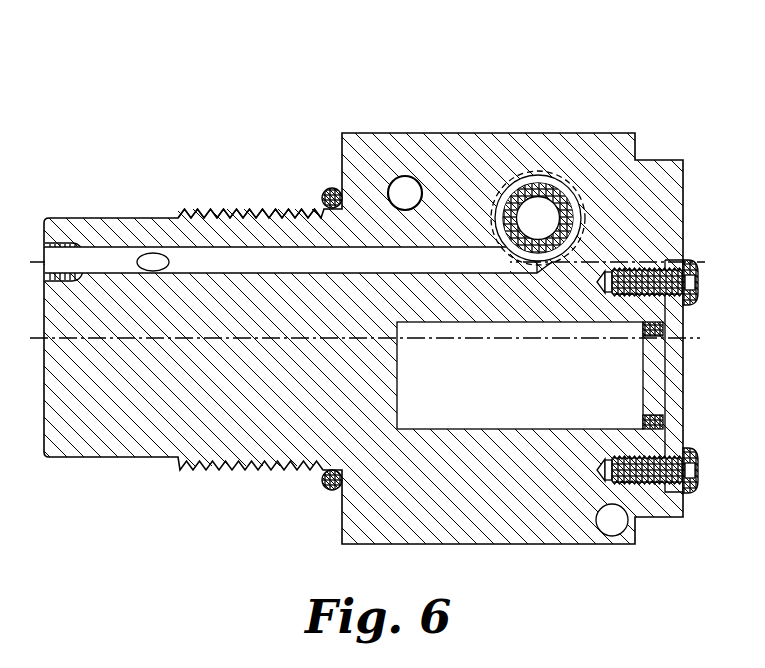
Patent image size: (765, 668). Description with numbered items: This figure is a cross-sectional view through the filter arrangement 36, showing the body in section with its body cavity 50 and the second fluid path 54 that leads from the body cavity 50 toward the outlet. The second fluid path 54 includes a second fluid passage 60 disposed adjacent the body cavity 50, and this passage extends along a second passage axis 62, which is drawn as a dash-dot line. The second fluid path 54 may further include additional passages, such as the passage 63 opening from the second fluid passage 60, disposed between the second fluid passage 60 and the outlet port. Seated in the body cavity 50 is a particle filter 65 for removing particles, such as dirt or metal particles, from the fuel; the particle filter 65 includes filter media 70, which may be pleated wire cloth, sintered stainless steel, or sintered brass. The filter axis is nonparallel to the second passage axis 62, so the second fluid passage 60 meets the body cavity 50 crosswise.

The filter arrangement 36 is at (645, 105).
The body cavity 50 is at (503, 191).
The second fluid path 54 is at (322, 253).
The second fluid passage 60 is at (265, 247).
The second passage axis 62 is at (390, 262).
The passage 63 is at (158, 256).
The particle filter 65 is at (560, 183).
The filter media 70 is at (542, 187).